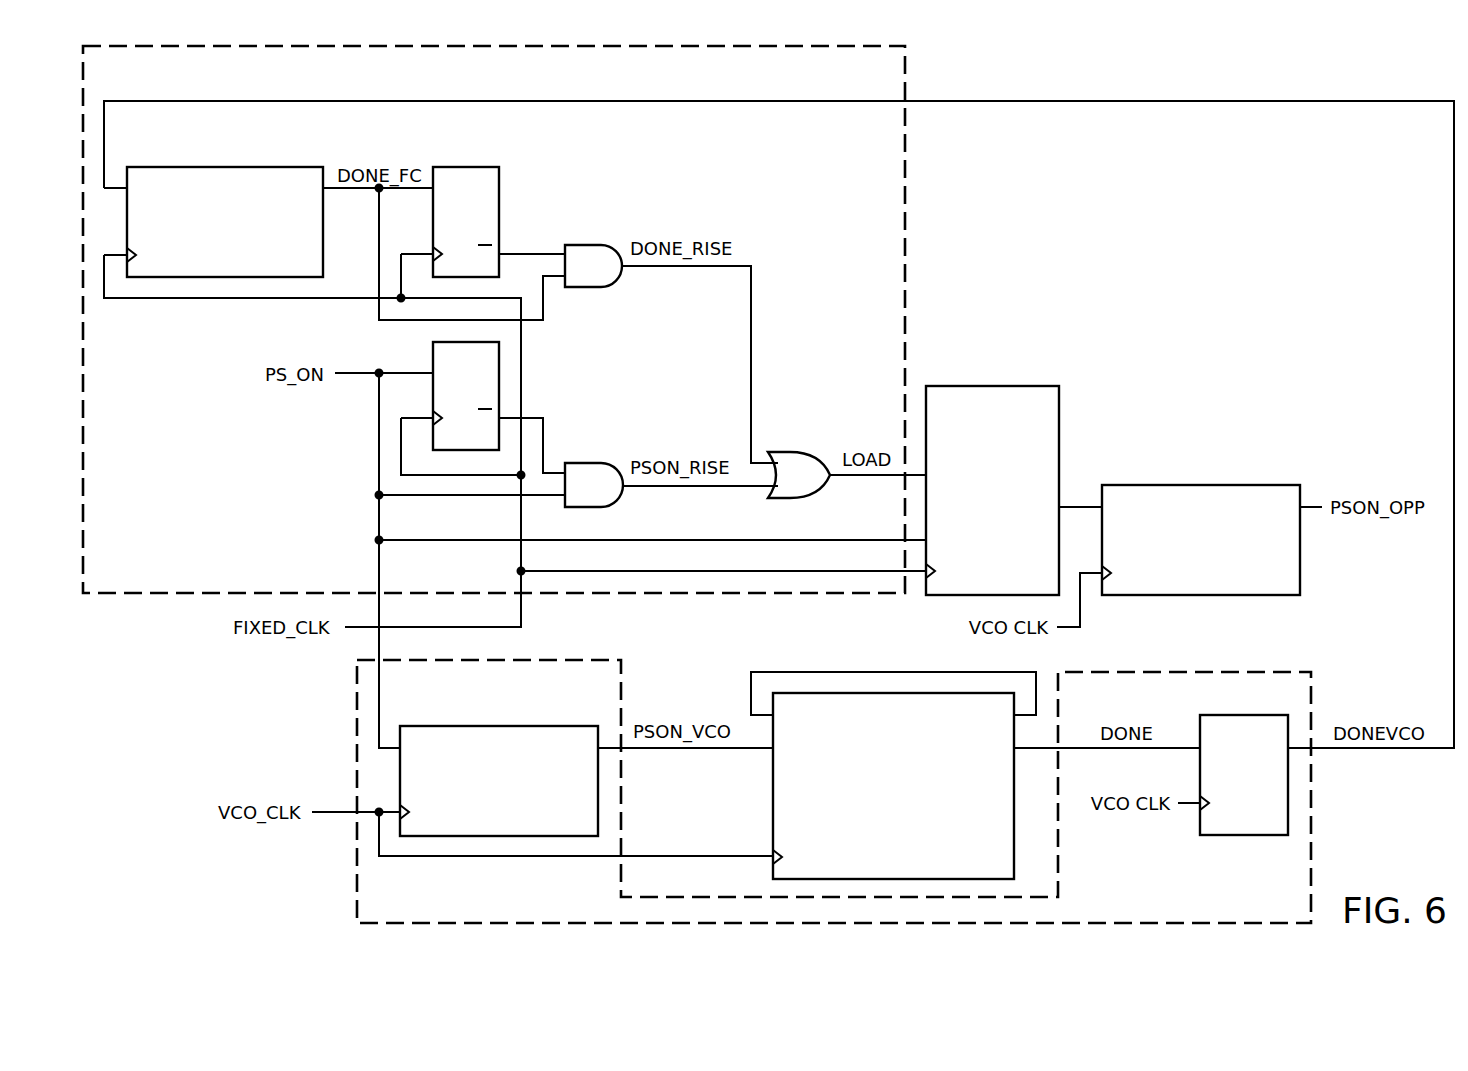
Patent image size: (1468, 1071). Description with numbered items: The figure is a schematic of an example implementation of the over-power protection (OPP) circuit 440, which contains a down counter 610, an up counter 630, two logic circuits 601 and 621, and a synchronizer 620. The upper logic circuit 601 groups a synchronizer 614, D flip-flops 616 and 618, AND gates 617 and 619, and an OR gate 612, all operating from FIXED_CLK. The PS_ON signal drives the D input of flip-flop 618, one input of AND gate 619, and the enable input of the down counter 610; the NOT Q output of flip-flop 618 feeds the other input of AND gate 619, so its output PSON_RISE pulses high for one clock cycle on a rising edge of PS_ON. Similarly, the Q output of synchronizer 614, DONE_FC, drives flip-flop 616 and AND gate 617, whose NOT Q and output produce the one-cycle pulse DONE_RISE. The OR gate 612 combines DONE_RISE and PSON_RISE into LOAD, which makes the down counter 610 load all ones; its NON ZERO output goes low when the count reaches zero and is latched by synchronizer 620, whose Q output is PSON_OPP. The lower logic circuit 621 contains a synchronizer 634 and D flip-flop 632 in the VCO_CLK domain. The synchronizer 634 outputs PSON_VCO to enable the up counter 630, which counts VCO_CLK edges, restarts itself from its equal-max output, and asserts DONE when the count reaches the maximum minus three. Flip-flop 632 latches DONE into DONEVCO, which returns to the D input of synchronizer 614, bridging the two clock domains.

The OPP circuit 440 is at (1272, 77).
The logic circuit 601 is at (907, 163).
The synchronizer 614 is at (227, 166).
The D flip-flop 616 is at (468, 166).
The AND gate 617 is at (592, 242).
The D flip-flop 618 is at (432, 360).
The AND gate 619 is at (592, 460).
The OR gate 612 is at (805, 447).
The down counter 610 is at (992, 385).
The synchronizer 620 is at (1200, 484).
The logic circuit 621 is at (355, 869).
The synchronizer 634 is at (500, 725).
The up counter 630 is at (872, 846).
The D flip-flop 632 is at (1243, 837).